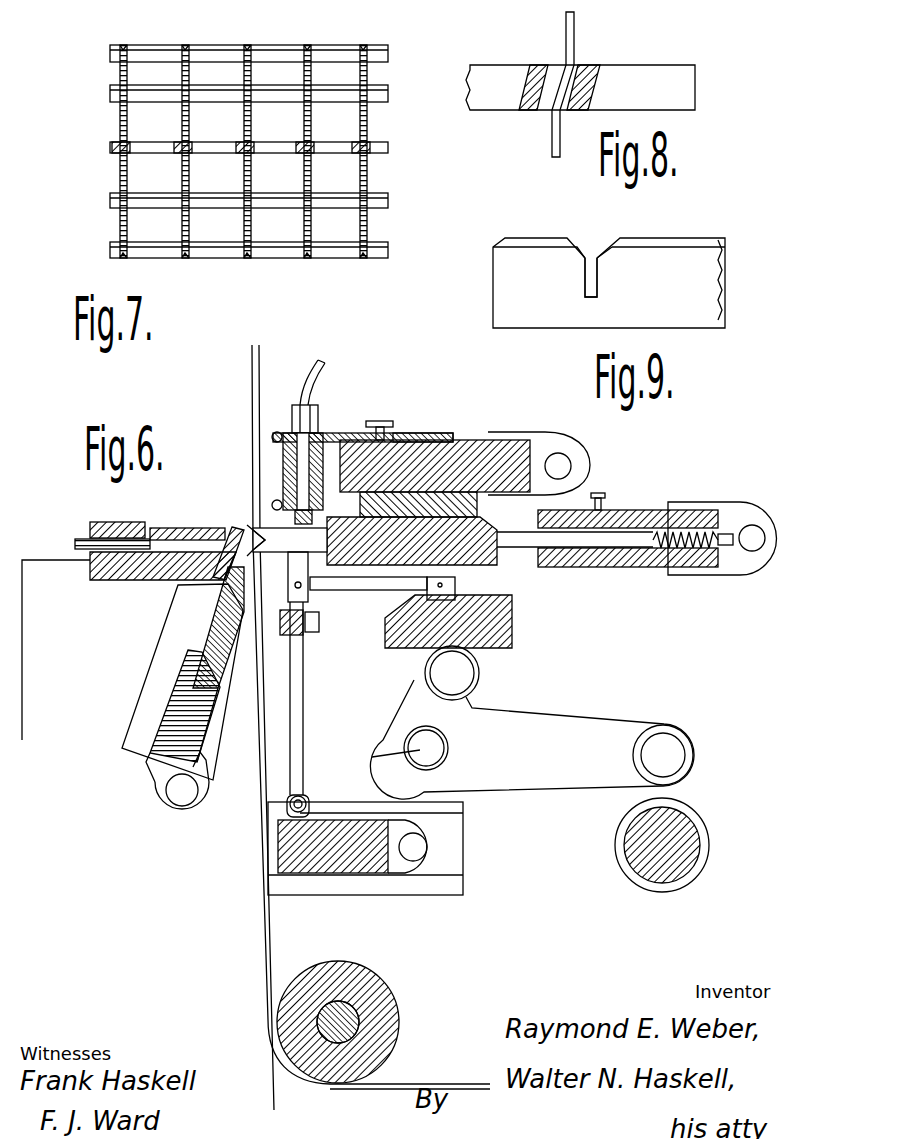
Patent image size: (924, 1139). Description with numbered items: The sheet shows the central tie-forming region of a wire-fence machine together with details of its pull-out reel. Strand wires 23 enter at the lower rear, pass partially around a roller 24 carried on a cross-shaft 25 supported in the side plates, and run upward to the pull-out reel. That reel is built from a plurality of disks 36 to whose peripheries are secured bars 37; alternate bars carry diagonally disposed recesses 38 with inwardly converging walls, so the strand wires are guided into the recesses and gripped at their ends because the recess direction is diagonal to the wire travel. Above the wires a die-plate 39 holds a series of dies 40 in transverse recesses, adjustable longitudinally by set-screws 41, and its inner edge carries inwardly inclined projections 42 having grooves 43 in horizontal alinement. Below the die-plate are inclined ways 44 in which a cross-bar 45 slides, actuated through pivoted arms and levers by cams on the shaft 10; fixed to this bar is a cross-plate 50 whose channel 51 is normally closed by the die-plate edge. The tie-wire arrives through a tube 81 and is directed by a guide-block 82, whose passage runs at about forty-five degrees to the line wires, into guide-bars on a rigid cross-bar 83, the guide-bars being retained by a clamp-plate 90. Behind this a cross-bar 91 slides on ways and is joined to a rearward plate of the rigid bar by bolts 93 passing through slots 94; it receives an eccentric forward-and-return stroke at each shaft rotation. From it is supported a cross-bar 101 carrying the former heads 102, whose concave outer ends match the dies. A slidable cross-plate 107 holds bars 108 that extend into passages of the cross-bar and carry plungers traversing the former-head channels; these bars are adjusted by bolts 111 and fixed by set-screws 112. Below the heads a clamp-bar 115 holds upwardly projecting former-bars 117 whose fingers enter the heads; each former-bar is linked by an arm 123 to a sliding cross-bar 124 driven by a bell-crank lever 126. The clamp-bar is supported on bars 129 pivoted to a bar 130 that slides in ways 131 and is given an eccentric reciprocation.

In FIG. 6, the shaft 10 is at (700, 846).
In FIG. 8, the strand wires 23 is at (576, 52).
In FIG. 6, the strand wires 23 is at (265, 786).
In FIG. 6, the roller 24 is at (392, 1014).
In FIG. 6, the cross-shaft 25 is at (316, 1030).
In FIG. 7, the disks 36 is at (360, 128).
In FIG. 7, the bars 37 is at (278, 46).
In FIG. 8, the bars 37 is at (645, 76).
In FIG. 9, the bars 37 is at (673, 258).
In FIG. 7, the recesses 38 is at (250, 44).
In FIG. 8, the recesses 38 is at (548, 112).
In FIG. 9, the recesses 38 is at (586, 283).
In FIG. 6, the die-plate 39 is at (122, 582).
In FIG. 6, the dies 40 is at (170, 540).
In FIG. 6, the set-screws 41 is at (96, 540).
In FIG. 6, the inwardly inclined projections 42 is at (244, 526).
In FIG. 6, the grooves 43 is at (236, 530).
In FIG. 6, the inclined ways 44 is at (150, 696).
In FIG. 6, the cross-bar 45 is at (156, 766).
In FIG. 6, the cross-plate 50 is at (215, 622).
In FIG. 6, the channel 51 is at (236, 578).
In FIG. 6, the tube 81 is at (318, 380).
In FIG. 6, the guide-block 82 is at (318, 413).
In FIG. 6, the cross-bar 83 is at (290, 470).
In FIG. 6, the clamp-plate 90 is at (285, 445).
In FIG. 6, the cross-bar 91 is at (470, 440).
In FIG. 6, the bolts 93 is at (386, 421).
In FIG. 6, the slots 94 is at (412, 433).
In FIG. 6, the cross-bar 101 is at (493, 568).
In FIG. 6, the former heads 102 is at (312, 552).
In FIG. 6, the cross-plate 107 is at (652, 508).
In FIG. 6, the bars 108 is at (618, 540).
In FIG. 6, the bolts 111 is at (702, 508).
In FIG. 6, the set-screws 112 is at (604, 492).
In FIG. 6, the clamp-bar 115 is at (296, 634).
In FIG. 6, the former-bars 117 is at (312, 620).
In FIG. 6, the arm 123 is at (386, 592).
In FIG. 6, the cross-bar 124 is at (512, 630).
In FIG. 6, the bell-crank lever 126 is at (578, 738).
In FIG. 6, the bars 129 is at (305, 732).
In FIG. 6, the bar 130 is at (330, 820).
In FIG. 6, the ways 131 is at (463, 852).